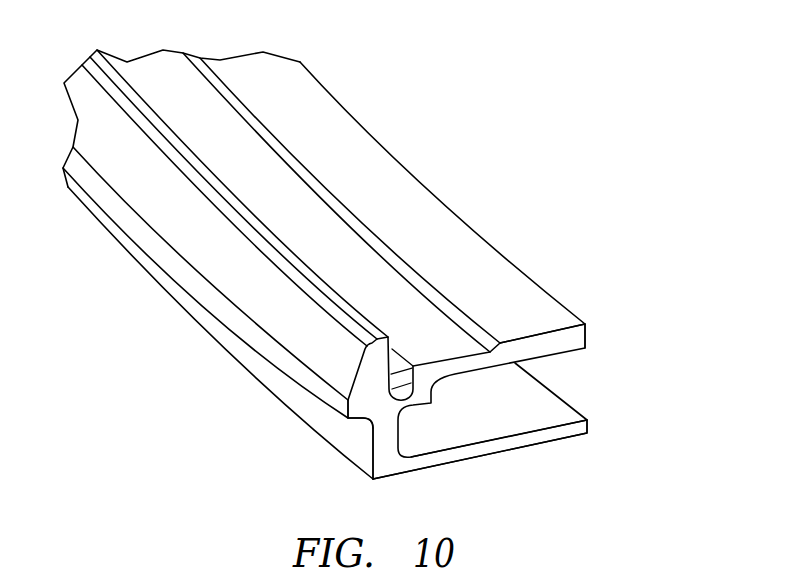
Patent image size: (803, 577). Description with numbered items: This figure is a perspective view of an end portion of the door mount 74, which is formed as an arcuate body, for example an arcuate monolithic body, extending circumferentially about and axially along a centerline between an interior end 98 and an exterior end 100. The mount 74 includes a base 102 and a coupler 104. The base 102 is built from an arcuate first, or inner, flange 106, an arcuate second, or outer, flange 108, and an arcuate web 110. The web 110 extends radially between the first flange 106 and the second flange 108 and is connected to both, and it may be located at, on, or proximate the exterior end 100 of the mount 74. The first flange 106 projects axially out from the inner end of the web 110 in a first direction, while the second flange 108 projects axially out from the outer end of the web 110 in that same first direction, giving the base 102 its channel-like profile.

The mount 74 is at (487, 99).
The interior end 98 is at (587, 335).
The exterior end 100 is at (298, 372).
The base 102 is at (348, 446).
The coupler 104 is at (220, 255).
The first flange 106 is at (518, 292).
The second flange 108 is at (510, 453).
The web 110 is at (373, 457).